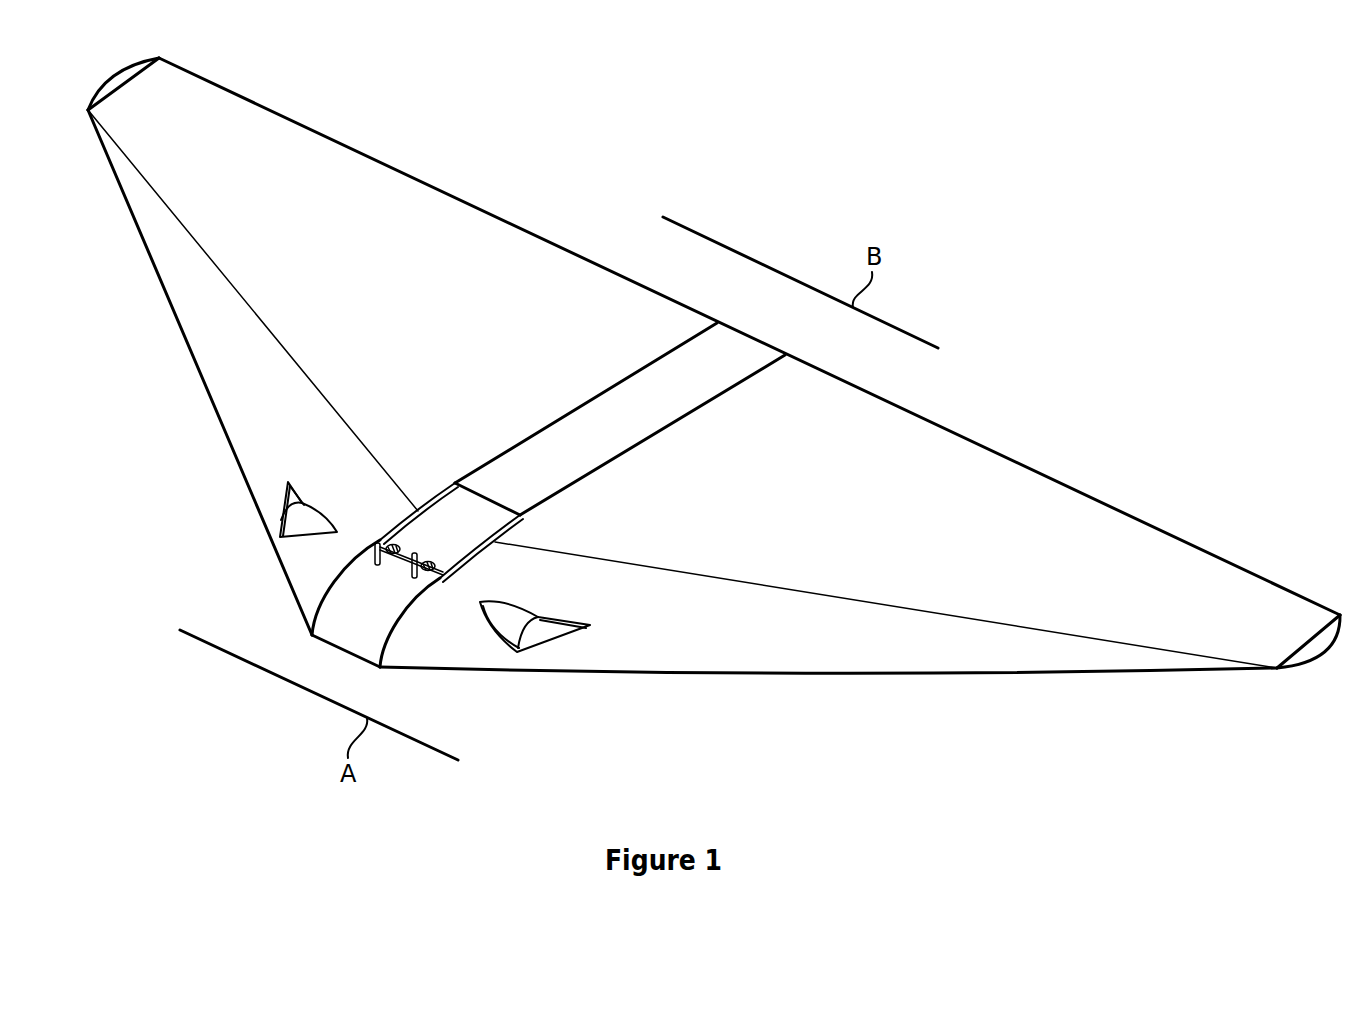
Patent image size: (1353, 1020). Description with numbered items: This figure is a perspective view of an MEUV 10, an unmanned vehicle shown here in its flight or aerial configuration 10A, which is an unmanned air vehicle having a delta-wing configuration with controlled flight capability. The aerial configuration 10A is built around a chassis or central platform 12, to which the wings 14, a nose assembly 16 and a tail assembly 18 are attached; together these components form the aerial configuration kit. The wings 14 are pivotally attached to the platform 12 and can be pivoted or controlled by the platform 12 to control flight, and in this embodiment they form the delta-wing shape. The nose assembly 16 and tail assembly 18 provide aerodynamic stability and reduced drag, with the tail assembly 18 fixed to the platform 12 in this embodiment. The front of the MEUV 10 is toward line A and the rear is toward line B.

The MEUV 10 is at (714, 365).
The MEUV aerial configuration 10A is at (762, 247).
The platform 12 is at (453, 537).
The wings 14 is at (380, 161).
The nose assembly 16 is at (367, 583).
The tail assembly 18 is at (708, 362).